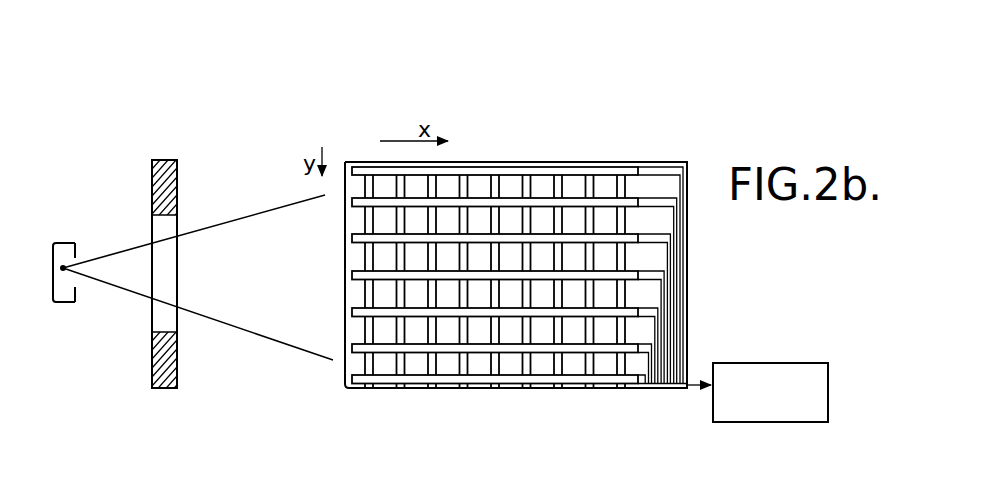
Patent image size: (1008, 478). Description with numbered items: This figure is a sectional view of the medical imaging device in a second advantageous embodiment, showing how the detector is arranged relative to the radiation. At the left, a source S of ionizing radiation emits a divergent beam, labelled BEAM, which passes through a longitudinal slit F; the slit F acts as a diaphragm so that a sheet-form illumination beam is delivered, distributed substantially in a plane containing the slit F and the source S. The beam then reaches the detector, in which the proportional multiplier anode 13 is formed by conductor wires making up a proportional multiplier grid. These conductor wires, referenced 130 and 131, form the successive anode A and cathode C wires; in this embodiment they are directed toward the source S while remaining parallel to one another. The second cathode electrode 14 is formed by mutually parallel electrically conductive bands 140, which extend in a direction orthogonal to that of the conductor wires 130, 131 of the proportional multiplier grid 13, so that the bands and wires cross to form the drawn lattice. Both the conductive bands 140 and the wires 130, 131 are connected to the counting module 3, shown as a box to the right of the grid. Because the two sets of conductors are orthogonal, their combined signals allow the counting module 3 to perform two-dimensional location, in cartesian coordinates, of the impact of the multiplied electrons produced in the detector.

The proportional multiplier anode 13 is at (654, 158).
The second cathode electrode 14 is at (354, 186).
The conductive bands 140 is at (540, 190).
The conductor wires 130 is at (600, 168).
The conductor wires 131 is at (576, 205).
The counting module 3 is at (775, 378).
The source S is at (77, 260).
The longitudinal slit F is at (177, 222).
The anode wires A is at (629, 172).
The cathode wires C is at (629, 204).
The beam BEAM is at (105, 288).